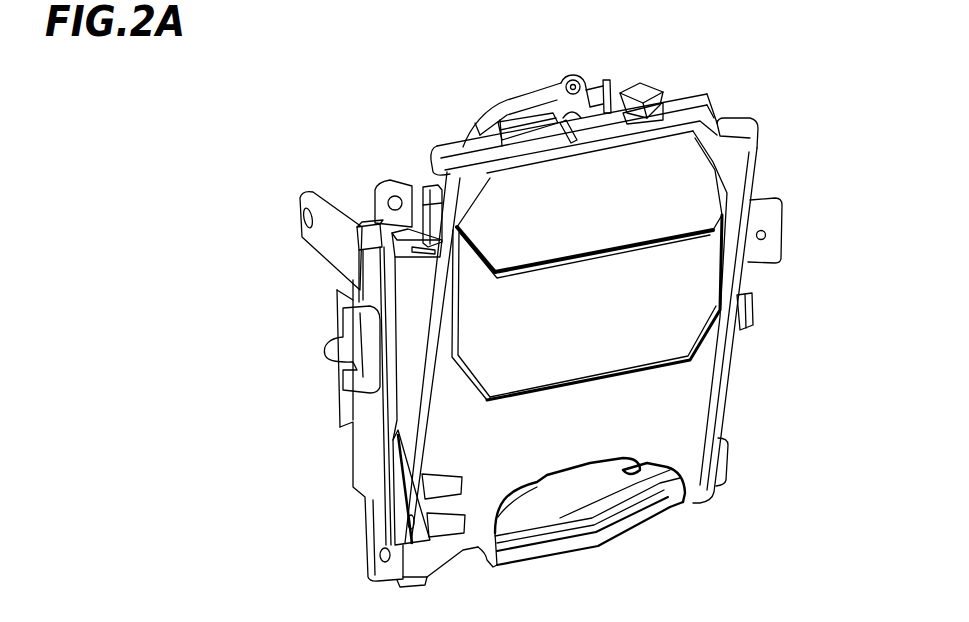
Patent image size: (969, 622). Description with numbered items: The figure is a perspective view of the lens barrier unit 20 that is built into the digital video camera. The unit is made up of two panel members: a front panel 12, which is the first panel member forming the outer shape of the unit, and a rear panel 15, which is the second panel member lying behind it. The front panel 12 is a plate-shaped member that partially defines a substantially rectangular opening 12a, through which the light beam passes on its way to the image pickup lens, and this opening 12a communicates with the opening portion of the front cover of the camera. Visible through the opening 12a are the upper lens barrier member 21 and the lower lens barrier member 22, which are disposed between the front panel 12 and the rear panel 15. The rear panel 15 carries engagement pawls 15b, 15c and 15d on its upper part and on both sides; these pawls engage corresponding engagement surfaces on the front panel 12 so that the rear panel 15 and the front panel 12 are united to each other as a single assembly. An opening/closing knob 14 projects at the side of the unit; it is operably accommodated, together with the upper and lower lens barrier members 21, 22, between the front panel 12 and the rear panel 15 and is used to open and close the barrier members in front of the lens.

The lens barrier unit 20 is at (300, 100).
The front panel 12 is at (717, 130).
The opening 12a is at (607, 343).
The upper lens barrier member 21 is at (693, 204).
The lower lens barrier member 22 is at (700, 278).
The rear panel 15 is at (510, 108).
The engagement pawl 15b is at (643, 83).
The engagement pawl 15c is at (430, 208).
The engagement pawl 15d is at (747, 313).
The opening/closing knob 14 is at (363, 358).